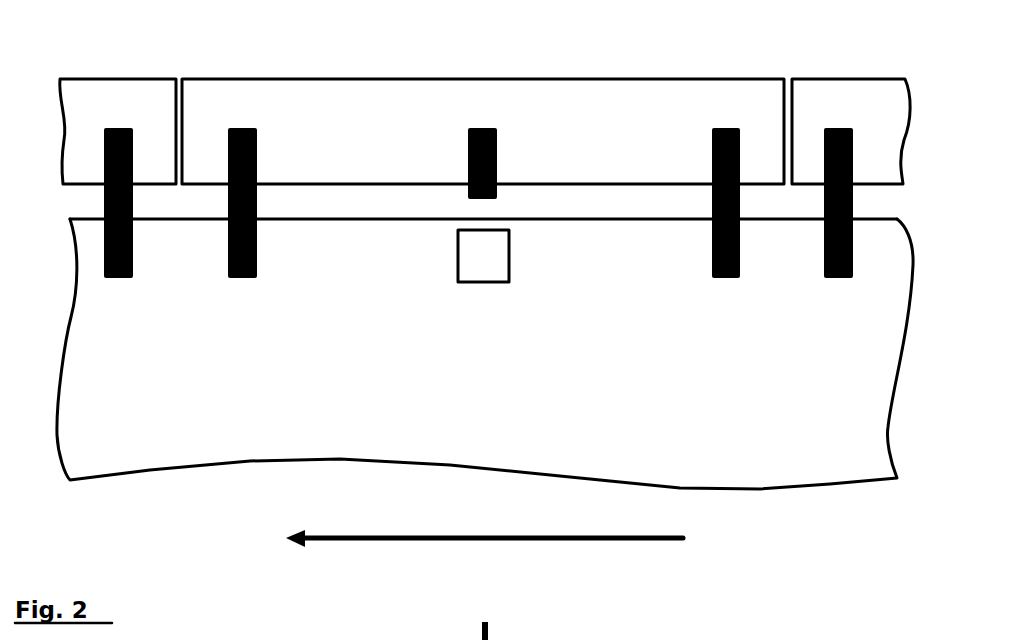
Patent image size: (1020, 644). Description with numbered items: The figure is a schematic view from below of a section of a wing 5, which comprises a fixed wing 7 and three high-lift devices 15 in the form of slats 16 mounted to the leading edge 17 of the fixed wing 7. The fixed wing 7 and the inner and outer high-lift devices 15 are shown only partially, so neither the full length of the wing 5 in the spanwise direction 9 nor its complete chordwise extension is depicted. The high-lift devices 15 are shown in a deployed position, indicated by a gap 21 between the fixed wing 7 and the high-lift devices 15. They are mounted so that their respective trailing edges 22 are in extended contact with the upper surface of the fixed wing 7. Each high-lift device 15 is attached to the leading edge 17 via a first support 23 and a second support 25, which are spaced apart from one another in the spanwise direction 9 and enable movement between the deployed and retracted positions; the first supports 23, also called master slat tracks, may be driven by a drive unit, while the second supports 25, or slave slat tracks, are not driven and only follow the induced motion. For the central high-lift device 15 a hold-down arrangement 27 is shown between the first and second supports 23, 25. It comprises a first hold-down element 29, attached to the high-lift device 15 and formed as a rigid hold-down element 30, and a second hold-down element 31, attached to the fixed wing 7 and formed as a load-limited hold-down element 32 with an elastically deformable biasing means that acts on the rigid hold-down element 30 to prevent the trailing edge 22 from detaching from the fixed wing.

The wing 5 is at (827, 505).
The fixed wing 7 is at (745, 388).
The spanwise direction 9 is at (553, 541).
The high-lift device 15 is at (117, 123).
The slat 16 is at (158, 123).
The leading edge 17 is at (60, 292).
The gap 21 is at (412, 216).
The trailing edge 22 is at (93, 184).
The first support 23 is at (228, 202).
The second support 25 is at (104, 202).
The hold-down arrangement 27 is at (550, 200).
The first hold-down element 29 is at (535, 163).
The rigid hold-down element 30 is at (498, 163).
The second hold-down element 31 is at (519, 290).
The load-limited hold-down element 32 is at (510, 253).